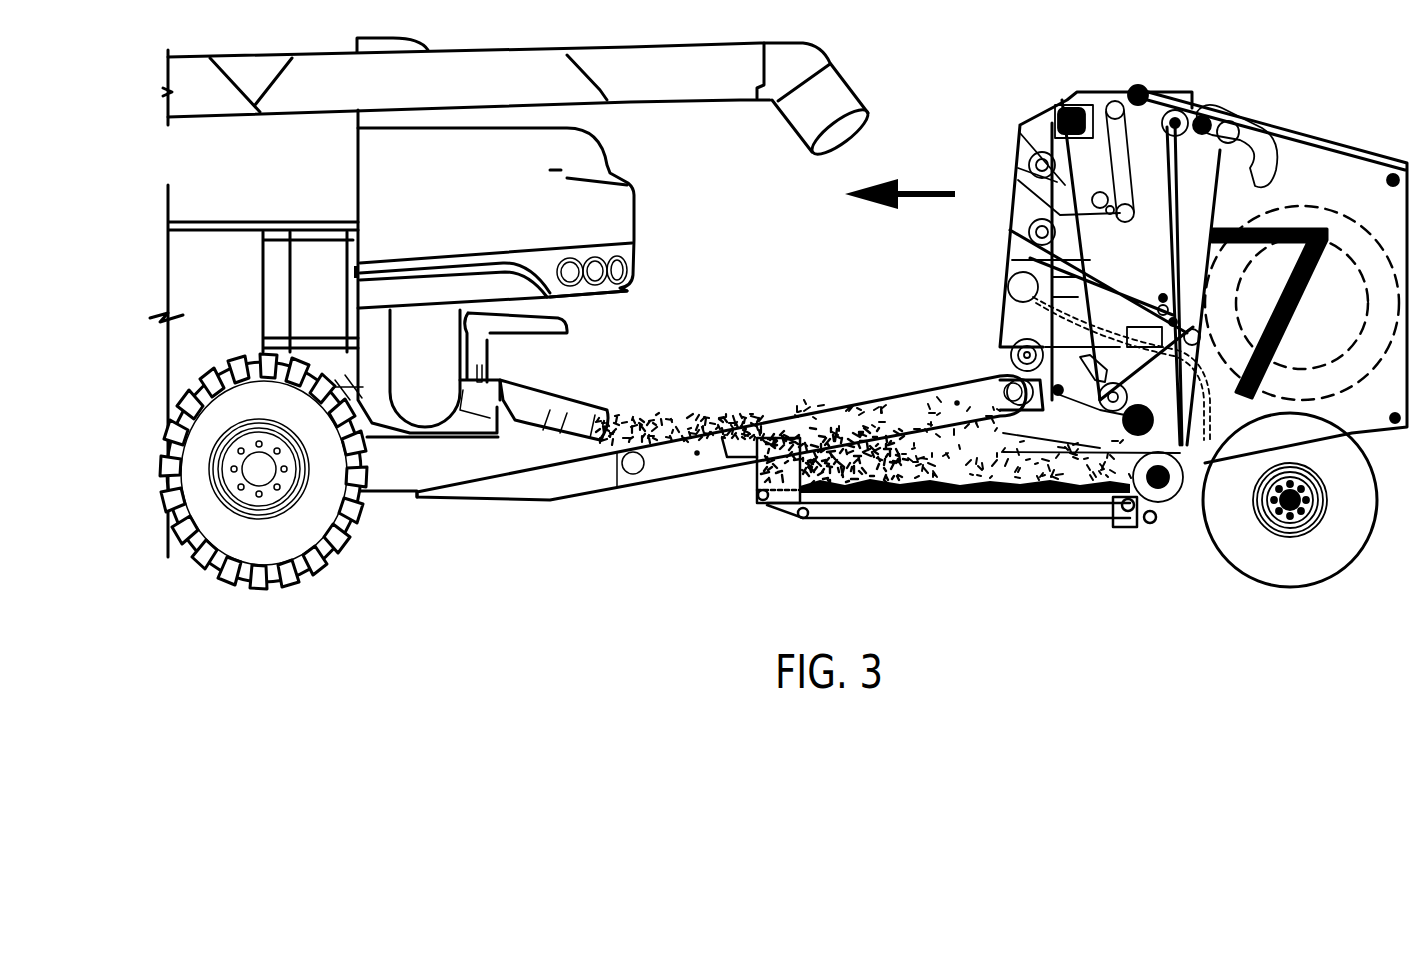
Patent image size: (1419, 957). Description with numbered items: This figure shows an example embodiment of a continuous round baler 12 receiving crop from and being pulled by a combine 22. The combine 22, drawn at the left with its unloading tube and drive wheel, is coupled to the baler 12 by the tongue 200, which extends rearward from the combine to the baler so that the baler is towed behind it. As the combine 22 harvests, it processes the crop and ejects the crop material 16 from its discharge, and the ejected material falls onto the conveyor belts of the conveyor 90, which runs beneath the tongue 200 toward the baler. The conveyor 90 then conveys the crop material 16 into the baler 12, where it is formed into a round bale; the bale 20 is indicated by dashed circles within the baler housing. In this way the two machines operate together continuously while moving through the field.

The combine 22 is at (417, 37).
The continuous round baler 12 is at (1326, 146).
The bale 20 is at (1340, 216).
The tongue 200 is at (927, 397).
The crop material 16 is at (970, 480).
The conveyor 90 is at (867, 517).